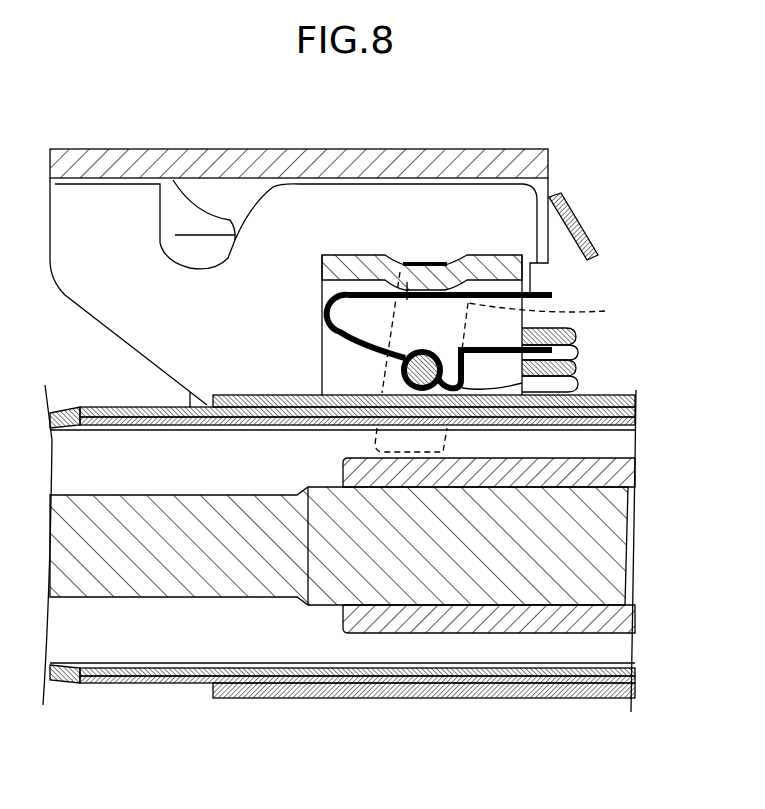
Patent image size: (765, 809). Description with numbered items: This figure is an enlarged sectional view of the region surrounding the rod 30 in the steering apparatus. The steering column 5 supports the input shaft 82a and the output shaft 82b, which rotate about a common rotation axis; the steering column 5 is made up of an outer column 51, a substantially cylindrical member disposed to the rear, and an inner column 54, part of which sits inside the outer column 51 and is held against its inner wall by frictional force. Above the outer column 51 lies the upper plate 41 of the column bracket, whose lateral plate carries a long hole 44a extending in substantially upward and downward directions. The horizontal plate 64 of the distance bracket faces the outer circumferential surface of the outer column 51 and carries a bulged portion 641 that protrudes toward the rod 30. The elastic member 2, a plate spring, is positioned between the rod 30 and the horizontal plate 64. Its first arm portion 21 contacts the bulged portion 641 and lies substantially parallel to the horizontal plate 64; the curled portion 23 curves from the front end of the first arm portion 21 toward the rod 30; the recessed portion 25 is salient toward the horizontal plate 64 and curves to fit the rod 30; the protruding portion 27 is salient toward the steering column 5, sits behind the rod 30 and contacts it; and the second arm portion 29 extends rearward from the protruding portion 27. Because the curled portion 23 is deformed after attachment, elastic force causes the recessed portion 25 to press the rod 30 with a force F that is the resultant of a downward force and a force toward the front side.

The upper plate 41 is at (128, 149).
The elastic member 2 is at (557, 263).
The horizontal plate 64 is at (330, 255).
The bulged portion 641 is at (433, 267).
The recessed portion 25 is at (395, 523).
The first arm portion 21 is at (537, 291).
The curled portion 23 is at (330, 313).
The rod 30 is at (400, 368).
The long hole 44a is at (510, 362).
The second arm portion 29 is at (545, 348).
The protruding portion 27 is at (527, 386).
The steering column 5 is at (400, 705).
The input shaft 82a is at (633, 471).
The output shaft 82b is at (620, 553).
The force F is at (400, 497).
The inner column 54 is at (133, 686).
The outer column 51 is at (540, 700).